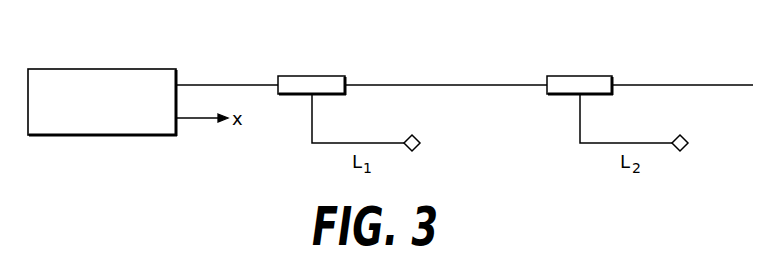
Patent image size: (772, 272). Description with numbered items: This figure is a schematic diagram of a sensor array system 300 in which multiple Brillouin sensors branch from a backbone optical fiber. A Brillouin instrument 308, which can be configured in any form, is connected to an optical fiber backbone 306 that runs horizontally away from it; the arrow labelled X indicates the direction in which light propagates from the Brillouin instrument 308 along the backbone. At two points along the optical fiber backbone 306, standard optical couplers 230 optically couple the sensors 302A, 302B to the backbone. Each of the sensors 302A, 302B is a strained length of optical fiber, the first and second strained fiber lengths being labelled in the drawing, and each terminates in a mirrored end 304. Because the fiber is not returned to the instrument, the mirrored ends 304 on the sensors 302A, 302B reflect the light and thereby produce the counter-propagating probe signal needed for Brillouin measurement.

The sensor array system 300 is at (101, 178).
The Brillouin instrument 308 is at (43, 68).
The optical fiber backbone 306 is at (247, 83).
The optical coupler 230 is at (335, 76).
The first Brillouin sensor 302A is at (318, 146).
The second Brillouin sensor 302B is at (590, 146).
The mirrored end 304 is at (417, 137).